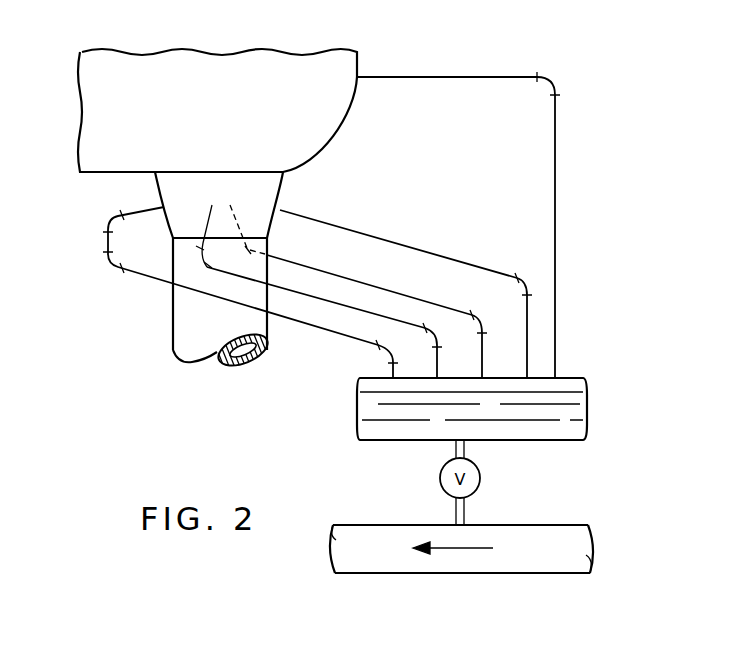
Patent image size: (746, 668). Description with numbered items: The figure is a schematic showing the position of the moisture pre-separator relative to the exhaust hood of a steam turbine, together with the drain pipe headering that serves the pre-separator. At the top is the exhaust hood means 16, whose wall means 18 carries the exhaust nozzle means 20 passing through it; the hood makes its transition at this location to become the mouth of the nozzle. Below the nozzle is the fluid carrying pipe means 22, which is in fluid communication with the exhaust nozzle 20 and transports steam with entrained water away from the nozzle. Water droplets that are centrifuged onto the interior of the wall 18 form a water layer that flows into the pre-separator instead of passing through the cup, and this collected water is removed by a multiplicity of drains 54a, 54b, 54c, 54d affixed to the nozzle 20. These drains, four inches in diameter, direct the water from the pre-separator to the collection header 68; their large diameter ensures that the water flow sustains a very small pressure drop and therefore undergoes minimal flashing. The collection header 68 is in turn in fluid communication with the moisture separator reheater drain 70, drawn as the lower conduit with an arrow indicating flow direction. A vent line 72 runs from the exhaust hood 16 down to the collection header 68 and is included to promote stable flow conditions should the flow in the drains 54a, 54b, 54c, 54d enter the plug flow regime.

The exhaust hood means 16 is at (358, 58).
The wall means 18 is at (327, 141).
The exhaust nozzle means 20 is at (268, 193).
The fluid carrying pipe means 22 is at (173, 347).
The drain means 54a is at (403, 245).
The drain means 54b is at (363, 282).
The drain means 54c is at (162, 280).
The drain means 54d is at (360, 311).
The collection header 68 is at (587, 417).
The moisture separator reheater drain 70 is at (580, 570).
The vent line 72 is at (557, 145).